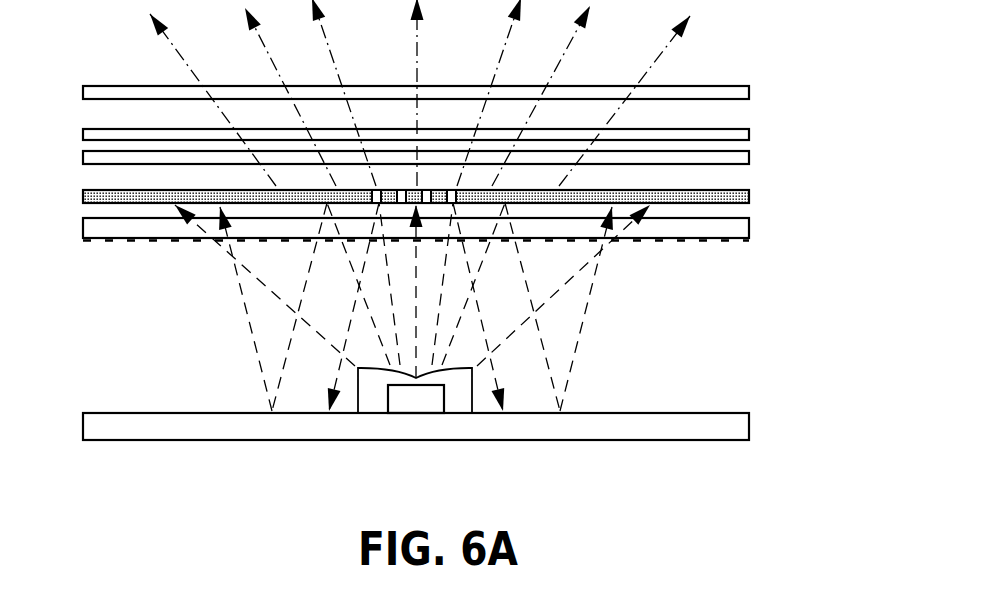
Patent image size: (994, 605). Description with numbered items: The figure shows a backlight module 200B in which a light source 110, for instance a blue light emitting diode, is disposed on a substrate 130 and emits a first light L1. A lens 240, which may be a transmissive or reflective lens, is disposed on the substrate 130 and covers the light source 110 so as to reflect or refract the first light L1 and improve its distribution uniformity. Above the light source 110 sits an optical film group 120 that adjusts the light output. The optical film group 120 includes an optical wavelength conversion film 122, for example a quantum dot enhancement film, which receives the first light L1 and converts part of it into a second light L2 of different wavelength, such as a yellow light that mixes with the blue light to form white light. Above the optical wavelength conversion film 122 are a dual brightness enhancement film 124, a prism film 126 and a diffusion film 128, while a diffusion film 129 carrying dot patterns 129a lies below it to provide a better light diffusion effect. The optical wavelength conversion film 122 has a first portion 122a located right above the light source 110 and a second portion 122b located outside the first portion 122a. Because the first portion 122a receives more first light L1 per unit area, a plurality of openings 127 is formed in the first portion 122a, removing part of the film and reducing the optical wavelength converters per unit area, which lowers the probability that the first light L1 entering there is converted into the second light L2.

The light source 110 is at (409, 397).
The optical film group 120 is at (82, 86).
The optical wavelength conversion film 122 is at (468, 120).
The first portion 122a is at (362, 187).
The second portion 122b is at (358, 187).
The dual brightness enhancement film 124 is at (737, 95).
The prism film 126 is at (737, 138).
The openings 127 is at (401, 190).
The diffusion film 128 is at (737, 160).
The diffusion film 129 is at (737, 230).
The dot patterns 129a is at (737, 242).
The substrate 130 is at (737, 428).
The lens 240 is at (457, 397).
The backlight module 200B is at (720, 511).
The first light L1 is at (575, 277).
The second light L2 is at (662, 58).